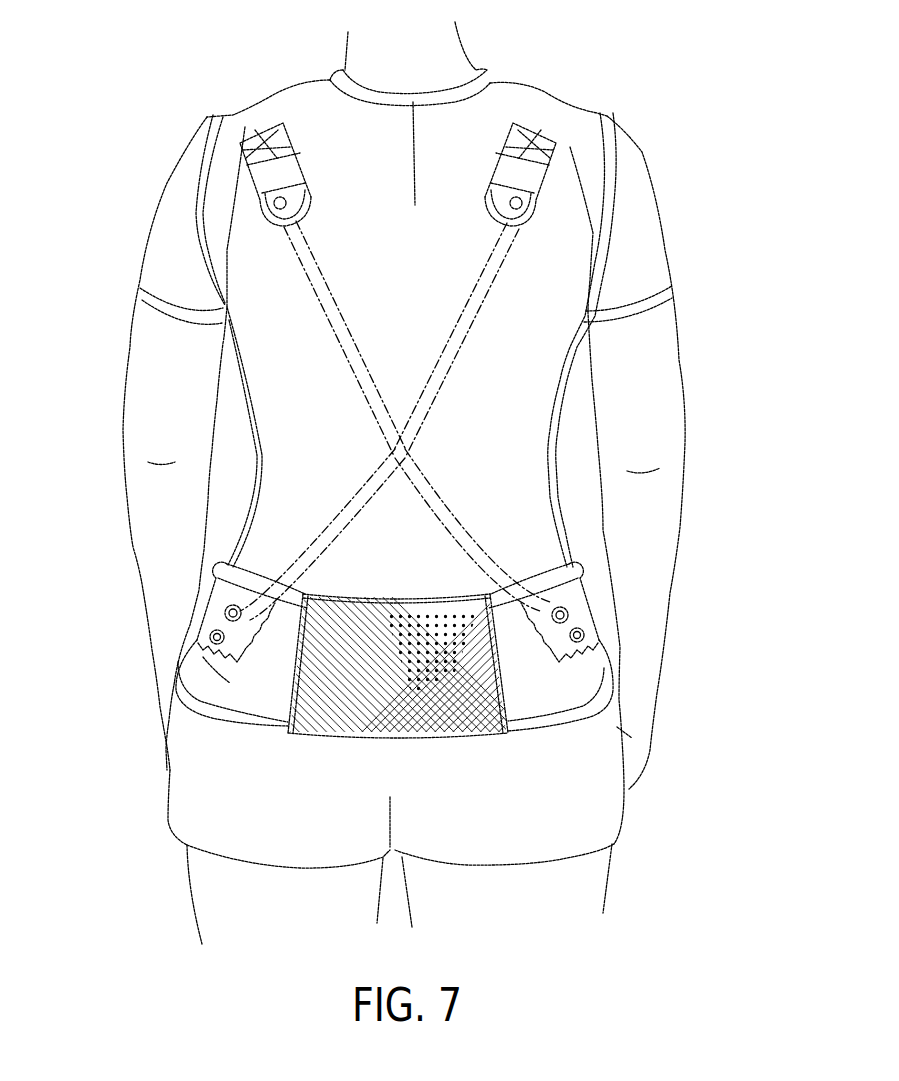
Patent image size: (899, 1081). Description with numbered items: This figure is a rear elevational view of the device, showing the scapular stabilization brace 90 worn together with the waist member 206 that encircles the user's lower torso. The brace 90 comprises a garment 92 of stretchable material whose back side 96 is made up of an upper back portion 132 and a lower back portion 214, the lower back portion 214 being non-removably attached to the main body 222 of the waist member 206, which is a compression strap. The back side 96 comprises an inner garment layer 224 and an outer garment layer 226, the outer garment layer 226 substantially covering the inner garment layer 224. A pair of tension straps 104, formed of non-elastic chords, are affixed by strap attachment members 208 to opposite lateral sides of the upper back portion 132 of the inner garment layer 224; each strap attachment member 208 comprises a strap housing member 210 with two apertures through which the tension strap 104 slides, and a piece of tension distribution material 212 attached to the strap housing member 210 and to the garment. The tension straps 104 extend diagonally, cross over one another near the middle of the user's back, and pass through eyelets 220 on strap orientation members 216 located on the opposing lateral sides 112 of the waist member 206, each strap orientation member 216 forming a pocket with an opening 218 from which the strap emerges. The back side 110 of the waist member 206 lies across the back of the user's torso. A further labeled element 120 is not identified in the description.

The scapular stabilization brace 90 is at (548, 83).
The garment 92 is at (517, 372).
The back side 96 is at (273, 95).
The tension straps 104 is at (315, 305).
The upper back portion 132 is at (552, 230).
The sleeve 120 is at (195, 223).
The tension distribution material 212 is at (277, 152).
The strap attachment members 208 is at (247, 173).
The strap housing member 210 is at (277, 205).
The outer garment layer 226 is at (275, 508).
The inner garment layer 224 is at (253, 562).
The opening 218 is at (235, 608).
The eyelets 220 is at (230, 615).
The strap orientation members 216 is at (222, 625).
The opposing lateral sides 112 is at (182, 643).
The back side 110 is at (542, 685).
The waist member 206 is at (160, 677).
The main body 222 is at (315, 703).
The lower back portion 214 is at (515, 533).